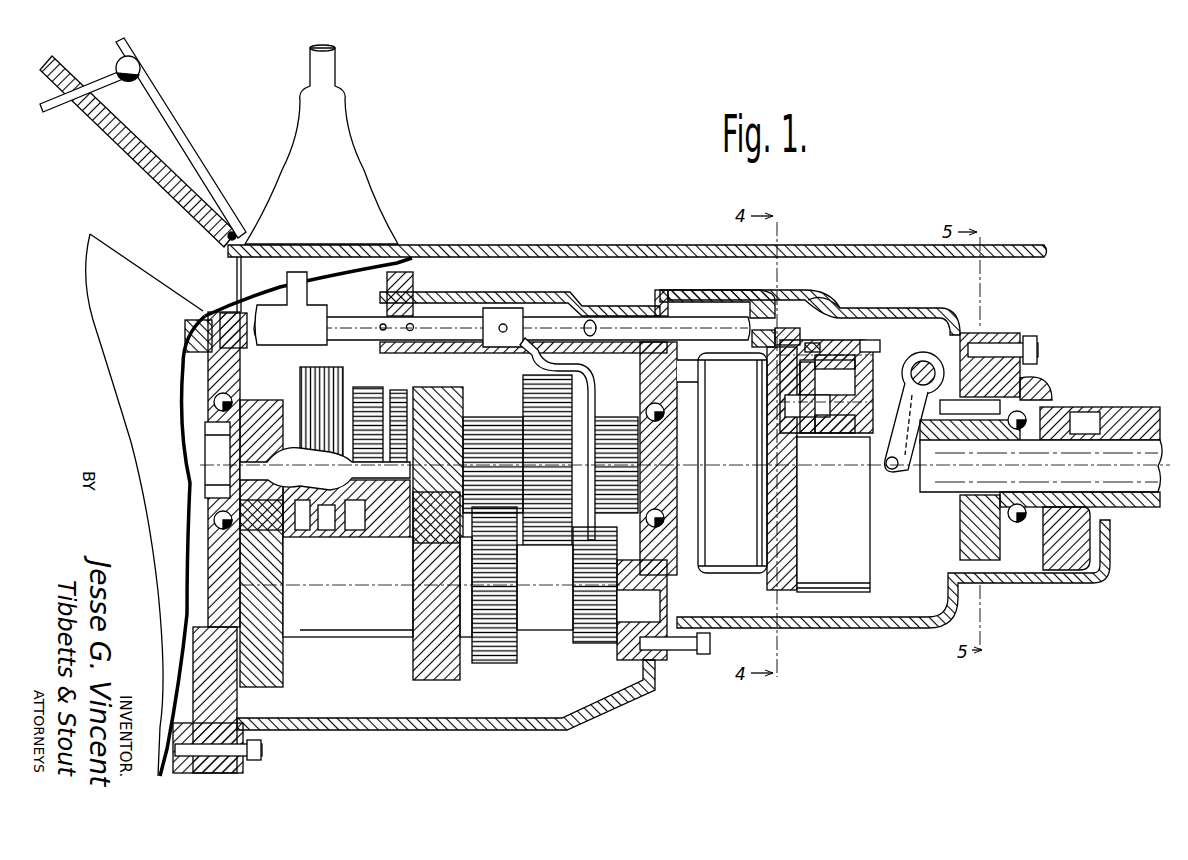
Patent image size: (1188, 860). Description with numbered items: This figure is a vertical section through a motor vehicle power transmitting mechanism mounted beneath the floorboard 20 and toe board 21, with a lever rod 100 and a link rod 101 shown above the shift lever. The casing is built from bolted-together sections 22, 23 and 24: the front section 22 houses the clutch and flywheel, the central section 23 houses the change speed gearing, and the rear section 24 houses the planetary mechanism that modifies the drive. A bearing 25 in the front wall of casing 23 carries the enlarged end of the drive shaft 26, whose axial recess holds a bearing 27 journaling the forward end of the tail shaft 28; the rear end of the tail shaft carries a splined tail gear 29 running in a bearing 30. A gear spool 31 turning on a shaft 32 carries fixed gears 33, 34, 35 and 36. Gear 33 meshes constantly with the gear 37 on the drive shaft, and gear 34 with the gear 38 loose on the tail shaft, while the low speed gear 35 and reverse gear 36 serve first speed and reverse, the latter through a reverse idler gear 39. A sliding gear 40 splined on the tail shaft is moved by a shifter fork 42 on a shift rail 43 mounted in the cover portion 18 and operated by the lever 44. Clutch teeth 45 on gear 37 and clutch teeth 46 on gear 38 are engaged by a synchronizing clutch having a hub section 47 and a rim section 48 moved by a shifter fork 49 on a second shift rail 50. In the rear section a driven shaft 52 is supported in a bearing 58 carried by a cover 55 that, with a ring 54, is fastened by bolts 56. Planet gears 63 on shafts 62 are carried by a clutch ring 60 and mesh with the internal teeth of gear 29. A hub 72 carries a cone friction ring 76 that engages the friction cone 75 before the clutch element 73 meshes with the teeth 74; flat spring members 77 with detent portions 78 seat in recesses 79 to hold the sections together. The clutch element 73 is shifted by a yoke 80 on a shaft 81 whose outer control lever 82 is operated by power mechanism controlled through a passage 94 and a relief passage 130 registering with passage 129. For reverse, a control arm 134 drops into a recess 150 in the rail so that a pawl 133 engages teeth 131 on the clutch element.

The cover portion 18 is at (568, 294).
The floorboard 20 is at (551, 245).
The toe board 21 is at (145, 180).
The casing section 22 is at (156, 292).
The casing section 23 is at (610, 708).
The casing section 24 is at (946, 626).
The bearing 25 is at (234, 392).
The drive shaft 26 is at (210, 442).
The bearing 27 is at (245, 470).
The tail shaft 28 is at (462, 512).
The tail gear 29 is at (700, 574).
The bearing 30 is at (648, 410).
The gear spool 31 is at (370, 640).
The shaft 32 is at (630, 656).
The gear 33 is at (274, 686).
The gear 34 is at (442, 680).
The low speed gear 35 is at (497, 664).
The reverse gear 36 is at (582, 645).
The gear 37 is at (250, 410).
The gear 38 is at (433, 390).
The reverse idler gear 39 is at (612, 520).
The gear 40 is at (523, 398).
The shifter fork 42 is at (590, 386).
The shift rail 43 is at (614, 326).
The lever 44 is at (336, 75).
The clutch teeth 45 is at (326, 532).
The clutch teeth 46 is at (392, 540).
The hub section 47 is at (300, 532).
The rim section 48 is at (354, 532).
The shifter fork 49 is at (322, 402).
The shift rail 50 is at (452, 318).
The driven shaft 52 is at (1142, 440).
The ring 54 is at (994, 340).
The cover 55 is at (1042, 396).
The bolts 56 is at (1040, 352).
The bearing 58 is at (1058, 408).
The clutch ring 60 is at (790, 450).
The shafts 62 is at (744, 404).
The planet gears 63 is at (752, 412).
The hub 72 is at (846, 436).
The clutch element 73 is at (850, 340).
The teeth 74 is at (768, 332).
The friction cone 75 is at (805, 436).
The cone friction ring 76 is at (826, 434).
The flat spring members 77 is at (832, 356).
The detent portions 78 is at (856, 344).
The recesses 79 is at (812, 344).
The yoke 80 is at (905, 406).
The shaft 81 is at (926, 362).
The control lever 82 is at (950, 540).
The passage 94 is at (411, 322).
The lever rod 100 is at (172, 128).
The link rod 101 is at (50, 108).
The passage 129 is at (400, 292).
The relief passage 130 is at (382, 322).
The teeth 131 is at (790, 328).
The pawl 133 is at (820, 308).
The control arm 134 is at (716, 290).
The recess 150 is at (658, 292).